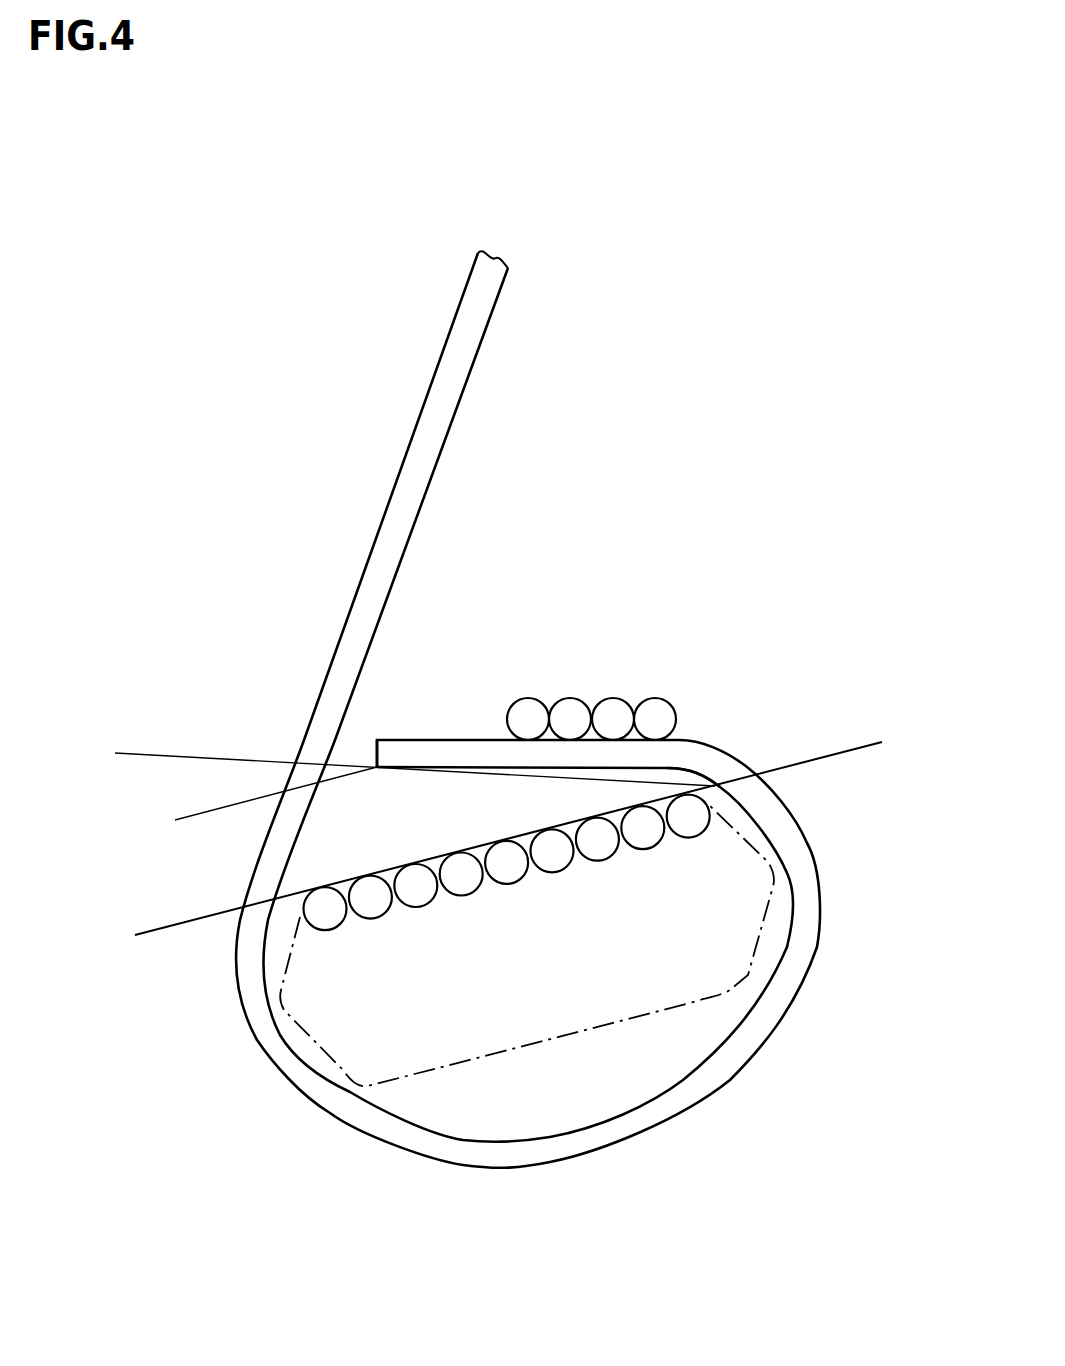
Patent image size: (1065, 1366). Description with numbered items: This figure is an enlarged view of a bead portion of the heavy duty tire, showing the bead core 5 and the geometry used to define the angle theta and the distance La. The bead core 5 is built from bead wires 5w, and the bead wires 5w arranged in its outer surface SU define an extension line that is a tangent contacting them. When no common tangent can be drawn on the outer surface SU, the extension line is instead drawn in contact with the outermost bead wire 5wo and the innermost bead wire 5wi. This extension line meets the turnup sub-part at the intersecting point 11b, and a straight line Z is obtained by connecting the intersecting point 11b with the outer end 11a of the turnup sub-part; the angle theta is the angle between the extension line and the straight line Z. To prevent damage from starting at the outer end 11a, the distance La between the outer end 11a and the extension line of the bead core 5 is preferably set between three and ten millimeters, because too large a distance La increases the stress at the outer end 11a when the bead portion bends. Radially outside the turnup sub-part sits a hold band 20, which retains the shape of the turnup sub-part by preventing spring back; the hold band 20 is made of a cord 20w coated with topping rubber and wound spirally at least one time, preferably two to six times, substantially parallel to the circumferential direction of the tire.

The bead core 5 is at (453, 1067).
The bead wires 5w is at (570, 1004).
The innermost bead wire 5wi is at (330, 915).
The outermost bead wires 5wo is at (690, 825).
The hold band 20 is at (620, 629).
The cord 20w is at (613, 718).
The outer end of turnup sub-part 11a is at (380, 727).
The intersecting point 11b is at (717, 772).
The straight line Z is at (207, 757).
The outer surface of bead core SU is at (845, 754).
The distance La is at (180, 820).